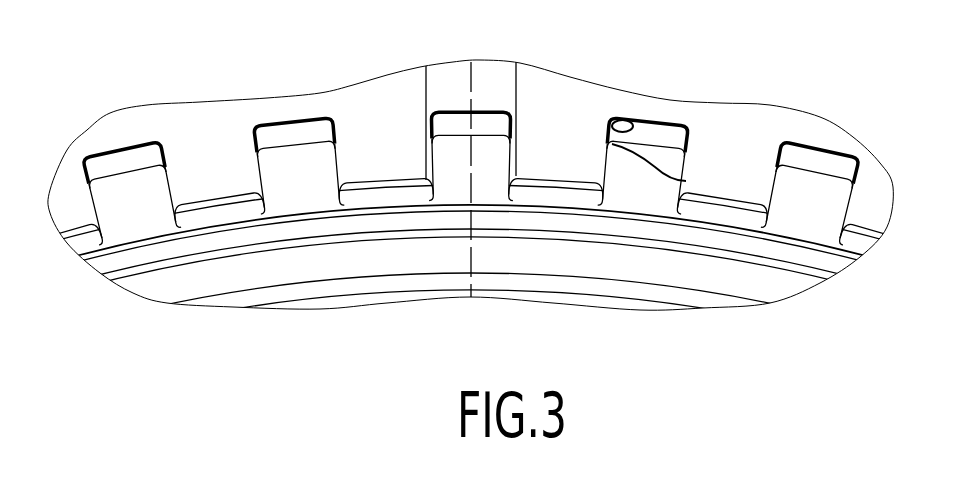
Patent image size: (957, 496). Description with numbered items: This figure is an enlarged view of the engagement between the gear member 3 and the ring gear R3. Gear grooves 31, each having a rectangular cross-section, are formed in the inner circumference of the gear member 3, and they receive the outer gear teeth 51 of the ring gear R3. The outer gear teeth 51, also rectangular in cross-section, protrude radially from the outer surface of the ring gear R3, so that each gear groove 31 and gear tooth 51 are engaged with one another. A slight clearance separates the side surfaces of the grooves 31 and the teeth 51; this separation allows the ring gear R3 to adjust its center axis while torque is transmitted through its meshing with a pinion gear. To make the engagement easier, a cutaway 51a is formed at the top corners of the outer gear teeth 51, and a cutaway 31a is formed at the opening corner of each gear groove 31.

The gear member 3 is at (340, 73).
The gear groove 31 is at (613, 125).
The cutaway 31a is at (686, 180).
The outer gear tooth 51 is at (661, 140).
The cutaway 51a is at (607, 168).
The ring gear R3 is at (692, 264).